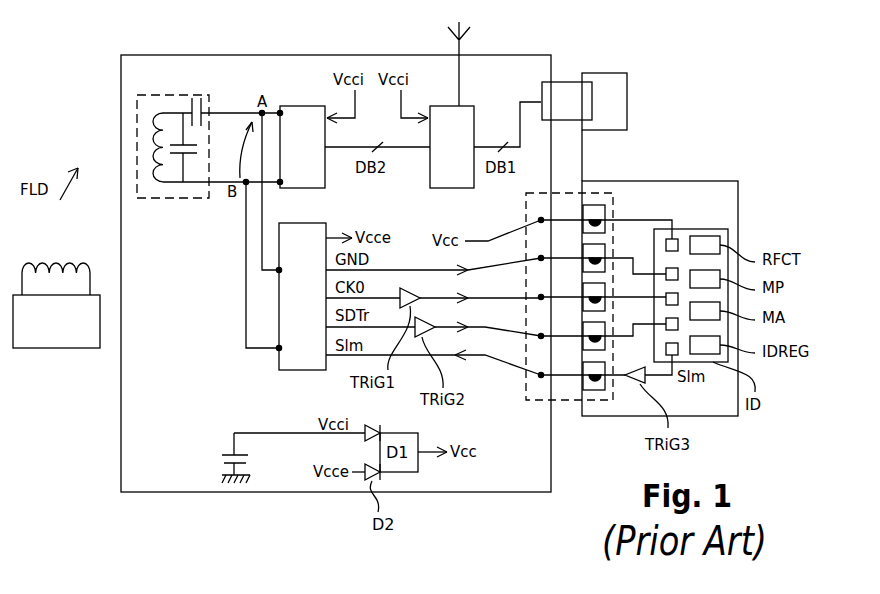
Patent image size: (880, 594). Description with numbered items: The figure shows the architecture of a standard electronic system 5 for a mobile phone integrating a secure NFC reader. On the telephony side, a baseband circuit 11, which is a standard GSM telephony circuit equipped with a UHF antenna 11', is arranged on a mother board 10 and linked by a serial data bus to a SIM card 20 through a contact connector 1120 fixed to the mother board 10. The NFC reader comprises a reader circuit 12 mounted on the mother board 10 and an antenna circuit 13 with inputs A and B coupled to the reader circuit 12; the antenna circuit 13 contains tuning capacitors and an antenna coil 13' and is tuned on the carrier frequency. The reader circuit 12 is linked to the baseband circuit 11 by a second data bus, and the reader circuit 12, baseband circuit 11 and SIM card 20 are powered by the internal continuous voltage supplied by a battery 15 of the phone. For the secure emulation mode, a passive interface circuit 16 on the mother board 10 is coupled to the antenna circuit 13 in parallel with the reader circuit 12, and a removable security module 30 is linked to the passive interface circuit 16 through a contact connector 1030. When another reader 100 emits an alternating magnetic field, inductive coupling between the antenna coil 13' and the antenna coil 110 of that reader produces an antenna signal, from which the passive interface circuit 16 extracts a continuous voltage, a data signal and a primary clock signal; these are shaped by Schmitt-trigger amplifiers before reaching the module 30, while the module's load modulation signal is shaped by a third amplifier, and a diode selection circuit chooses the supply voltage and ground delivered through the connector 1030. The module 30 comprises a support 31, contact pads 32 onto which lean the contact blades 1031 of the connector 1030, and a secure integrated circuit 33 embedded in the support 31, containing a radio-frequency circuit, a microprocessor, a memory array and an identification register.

The electronic system 5 is at (92, 70).
The mother board 10 is at (178, 493).
The baseband circuit 11 is at (452, 147).
The UHF antenna 11' is at (417, 58).
The reader circuit 12 is at (302, 147).
The antenna circuit 13 is at (199, 110).
The antenna coil 13' is at (121, 143).
The battery 15 is at (222, 455).
The passive interface circuit 16 is at (302, 296).
The SIM card 20 is at (628, 98).
The removable security module 30 is at (753, 200).
The support 31 is at (660, 181).
The contact pads 32 is at (600, 398).
The secure integrated circuit 33 is at (700, 229).
The reader 100 is at (56, 321).
The antenna coil 110 is at (92, 275).
The contact connector 1030 is at (573, 403).
The contact blades 1031 is at (555, 400).
The contact connector 1120 is at (572, 82).